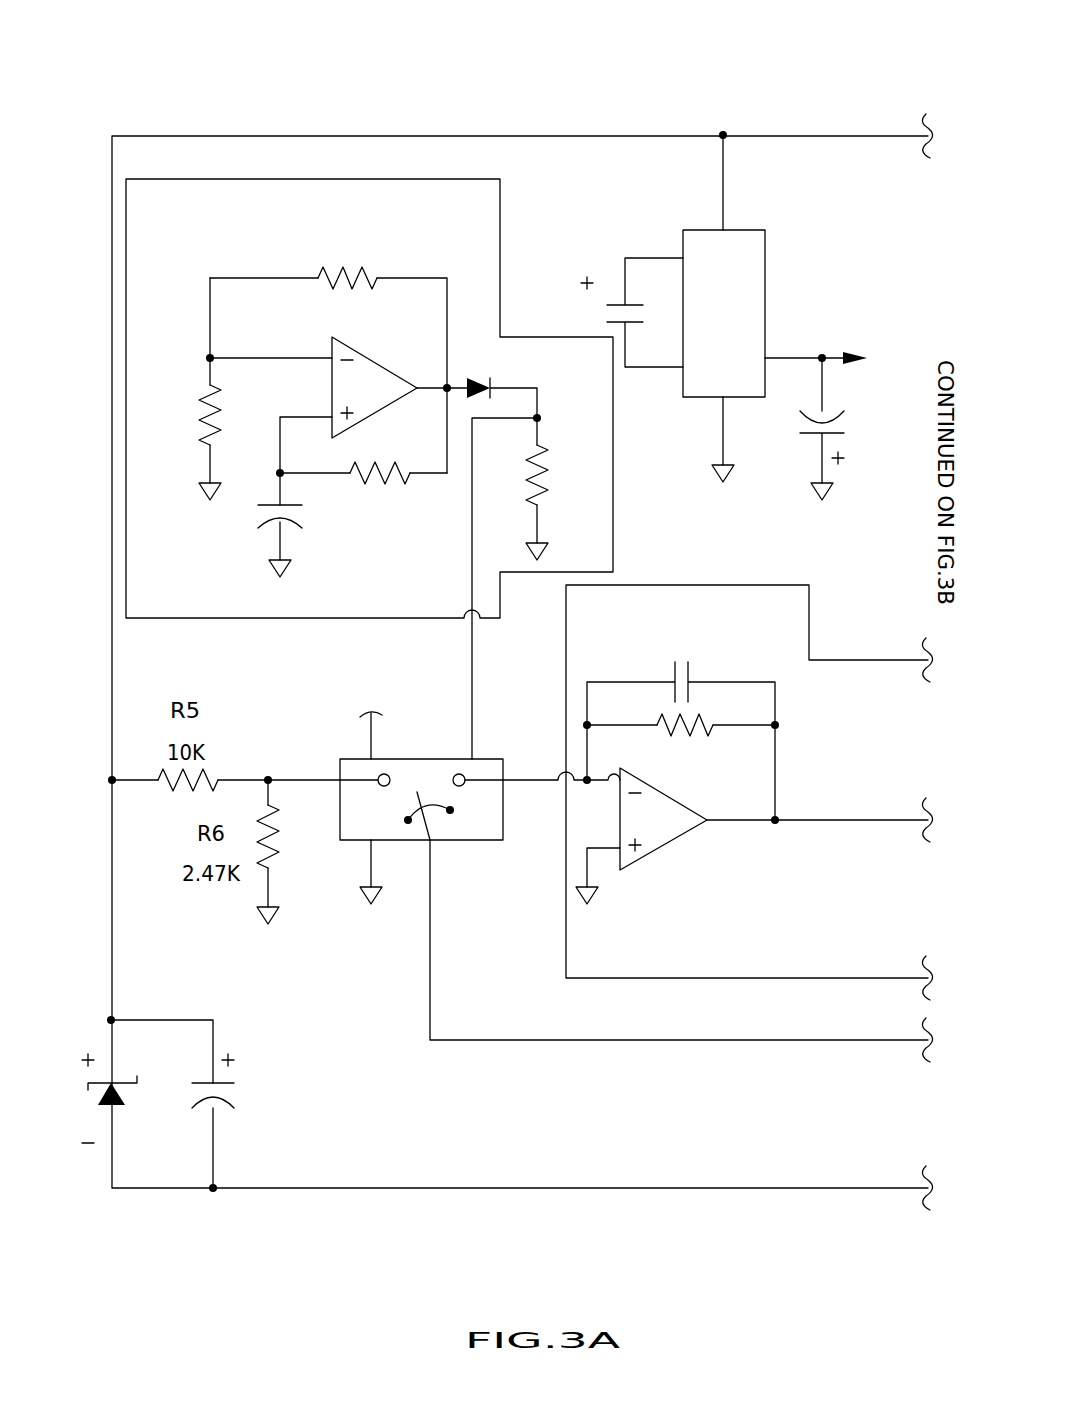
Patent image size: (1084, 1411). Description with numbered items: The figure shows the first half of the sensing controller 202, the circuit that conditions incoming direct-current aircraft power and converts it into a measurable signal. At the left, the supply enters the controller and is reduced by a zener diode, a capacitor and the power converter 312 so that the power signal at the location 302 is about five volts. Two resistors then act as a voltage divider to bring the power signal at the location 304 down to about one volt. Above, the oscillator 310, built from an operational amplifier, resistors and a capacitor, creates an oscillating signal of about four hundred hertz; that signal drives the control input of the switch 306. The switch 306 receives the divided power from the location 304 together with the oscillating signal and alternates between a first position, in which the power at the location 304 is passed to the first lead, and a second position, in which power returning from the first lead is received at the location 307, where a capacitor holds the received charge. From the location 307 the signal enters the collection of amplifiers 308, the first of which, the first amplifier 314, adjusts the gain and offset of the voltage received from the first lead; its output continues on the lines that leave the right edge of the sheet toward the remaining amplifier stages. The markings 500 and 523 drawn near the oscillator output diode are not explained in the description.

The stimulus circuit 202 is at (295, 91).
The 400 Hz oscillator 310 is at (405, 179).
The voltage regulator IC2 312 is at (696, 249).
The output line 308 is at (865, 660).
The signal line to IC1 307 is at (548, 778).
The input line to IC3 304 is at (320, 782).
The switch IC3 306 is at (407, 841).
The power input node 302 is at (110, 1018).
The amplifier IC1 314 is at (640, 862).
The diode D1 output 500 is at (508, 391).
The resistor R4 523 is at (563, 458).